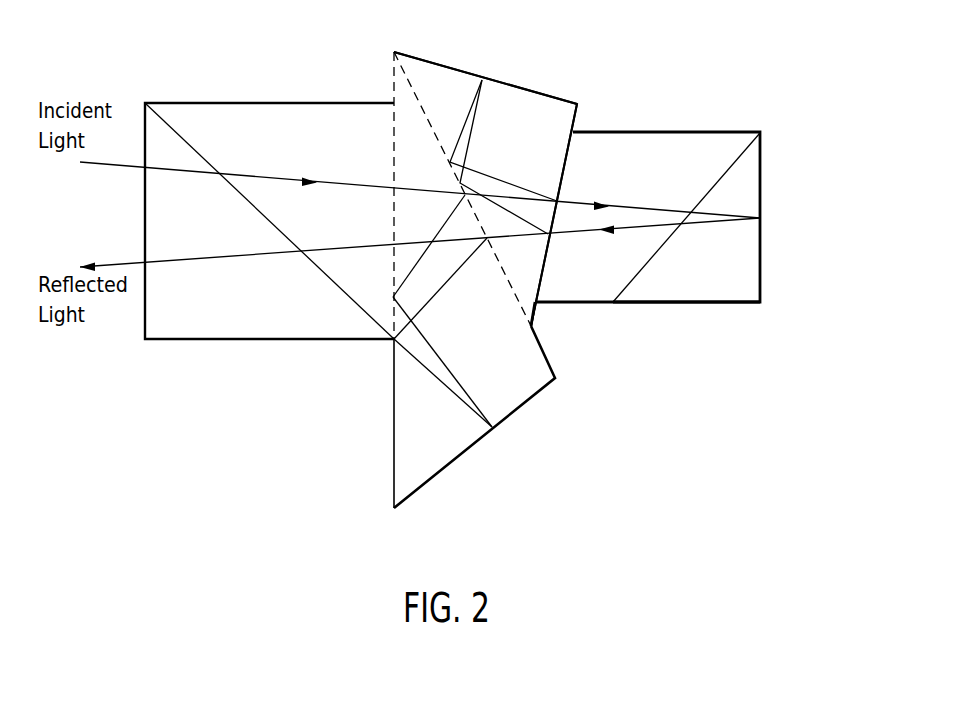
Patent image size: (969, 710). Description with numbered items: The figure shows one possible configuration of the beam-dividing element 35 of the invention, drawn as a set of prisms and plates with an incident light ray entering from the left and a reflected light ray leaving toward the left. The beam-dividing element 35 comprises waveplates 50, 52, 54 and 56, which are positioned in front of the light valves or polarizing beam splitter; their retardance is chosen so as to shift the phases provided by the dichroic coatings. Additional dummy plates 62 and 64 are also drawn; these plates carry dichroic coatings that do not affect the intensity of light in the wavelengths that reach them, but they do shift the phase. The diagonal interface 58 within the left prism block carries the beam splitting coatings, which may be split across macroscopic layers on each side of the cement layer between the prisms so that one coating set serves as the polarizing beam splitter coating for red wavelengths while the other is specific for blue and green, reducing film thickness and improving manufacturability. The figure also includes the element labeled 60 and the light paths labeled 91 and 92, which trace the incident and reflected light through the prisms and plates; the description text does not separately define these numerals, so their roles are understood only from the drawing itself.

The beam-dividing element 35 is at (676, 79).
The waveplate 50 is at (768, 267).
The waveplate 52 is at (551, 89).
The waveplate 54 is at (538, 404).
The waveplate 56 is at (389, 345).
The interface 58 is at (347, 302).
The lower surface of block 60 is at (642, 278).
The dummy plate 62 is at (719, 168).
The dummy plate 64 is at (551, 281).
The reflected light ray 91 is at (420, 262).
The incident light ray 92 is at (420, 226).